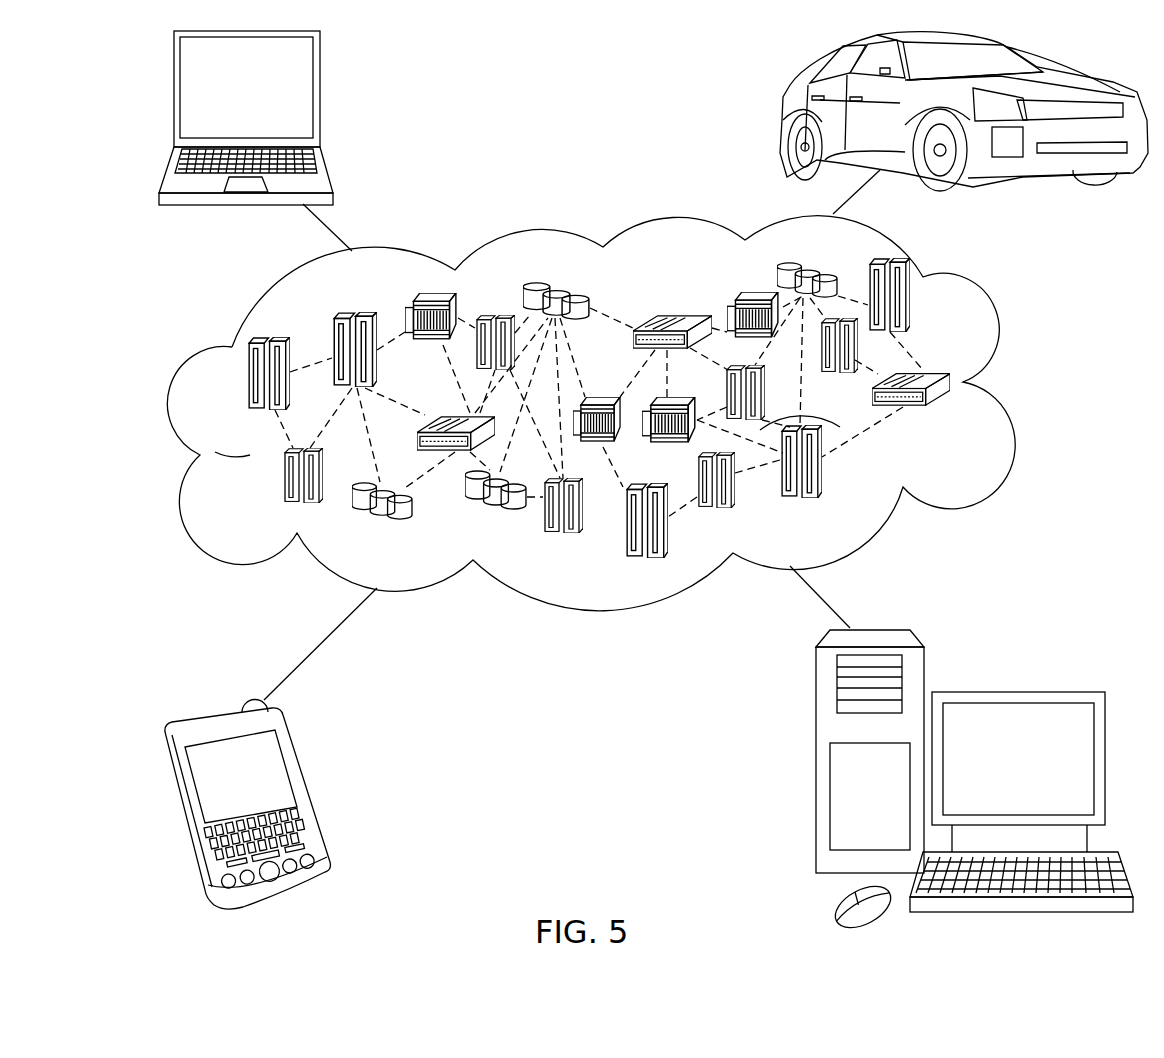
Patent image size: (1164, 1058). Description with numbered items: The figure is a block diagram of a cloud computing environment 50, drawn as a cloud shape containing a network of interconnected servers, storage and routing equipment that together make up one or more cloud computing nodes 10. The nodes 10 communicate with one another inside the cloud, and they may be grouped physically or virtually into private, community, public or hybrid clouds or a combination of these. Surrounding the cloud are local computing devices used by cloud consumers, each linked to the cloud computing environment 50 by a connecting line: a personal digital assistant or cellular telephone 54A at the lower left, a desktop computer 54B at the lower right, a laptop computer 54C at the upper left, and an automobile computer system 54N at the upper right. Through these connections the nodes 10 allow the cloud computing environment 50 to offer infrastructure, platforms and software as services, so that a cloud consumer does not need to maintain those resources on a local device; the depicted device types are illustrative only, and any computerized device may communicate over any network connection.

The cloud computing environment 50 is at (1017, 383).
The cloud computing nodes 10 is at (968, 423).
The personal digital assistant or cellular telephone 54A is at (307, 790).
The desktop computer 54B is at (1015, 692).
The laptop computer 54C is at (320, 95).
The automobile computer system 54N is at (782, 112).